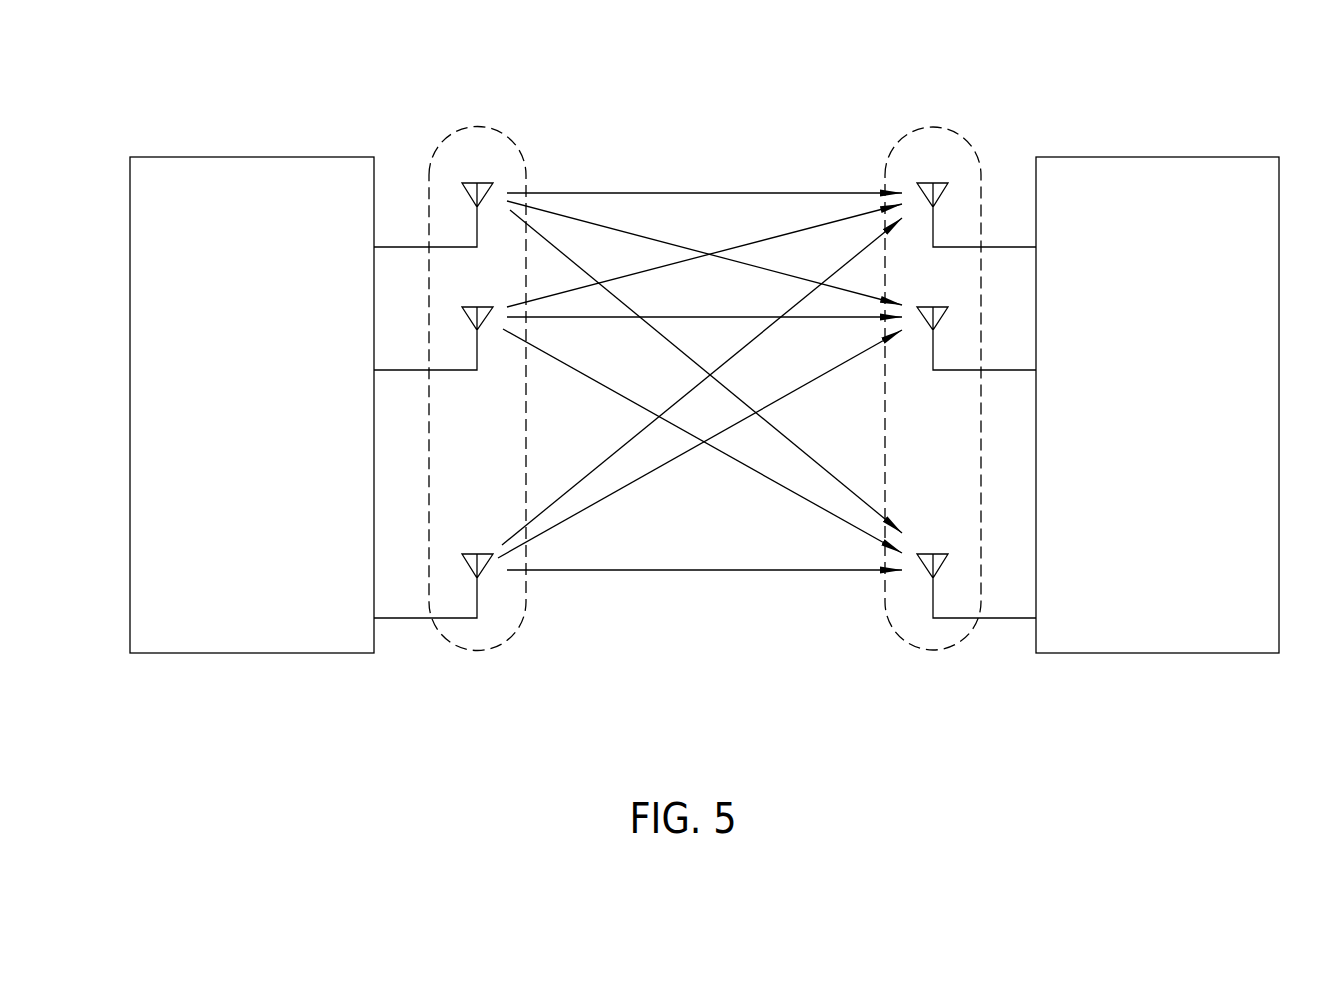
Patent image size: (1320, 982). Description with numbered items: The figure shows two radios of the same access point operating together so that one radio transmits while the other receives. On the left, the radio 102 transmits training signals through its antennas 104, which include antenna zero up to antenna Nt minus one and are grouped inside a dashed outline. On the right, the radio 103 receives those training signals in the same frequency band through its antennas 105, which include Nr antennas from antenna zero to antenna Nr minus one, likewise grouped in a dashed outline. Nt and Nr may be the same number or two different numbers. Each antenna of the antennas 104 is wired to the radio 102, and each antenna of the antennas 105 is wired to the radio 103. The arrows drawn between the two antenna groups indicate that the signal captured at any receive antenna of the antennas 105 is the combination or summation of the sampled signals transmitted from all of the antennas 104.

The radio 102 is at (232, 257).
The radio 103 is at (1140, 257).
The antennas 104 is at (470, 105).
The antennas 105 is at (938, 105).